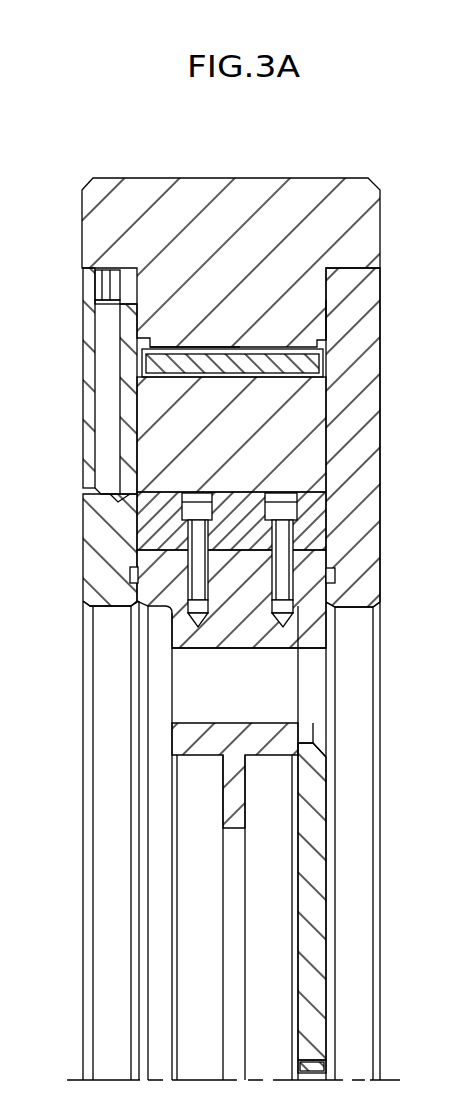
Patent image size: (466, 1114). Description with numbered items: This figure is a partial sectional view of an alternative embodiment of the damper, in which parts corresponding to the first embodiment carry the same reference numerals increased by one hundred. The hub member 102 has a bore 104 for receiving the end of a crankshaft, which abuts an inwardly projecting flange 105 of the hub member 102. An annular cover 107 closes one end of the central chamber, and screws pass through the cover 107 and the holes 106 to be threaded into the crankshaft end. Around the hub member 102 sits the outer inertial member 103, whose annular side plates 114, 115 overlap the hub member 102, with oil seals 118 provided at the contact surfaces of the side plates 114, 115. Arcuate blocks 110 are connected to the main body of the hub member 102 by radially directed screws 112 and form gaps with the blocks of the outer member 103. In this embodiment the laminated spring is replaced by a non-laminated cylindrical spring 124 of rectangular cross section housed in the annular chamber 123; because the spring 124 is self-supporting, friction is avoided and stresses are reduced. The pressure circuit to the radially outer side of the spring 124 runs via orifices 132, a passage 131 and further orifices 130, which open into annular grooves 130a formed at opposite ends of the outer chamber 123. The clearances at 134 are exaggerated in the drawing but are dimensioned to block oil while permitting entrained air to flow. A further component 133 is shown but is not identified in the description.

The hub member 102 is at (326, 637).
The outer inertial member 103 is at (262, 178).
The bore 104 is at (113, 777).
The inwardly projecting flange 105 is at (192, 737).
The holes 106 is at (192, 652).
The annular cover 107 is at (327, 786).
The arcuate blocks 110 is at (140, 533).
The radially directed screws 112 is at (137, 488).
The side plate 114 is at (382, 434).
The side plate 115 is at (88, 400).
The oil seals 118 is at (131, 577).
The annular chamber 123 is at (193, 345).
The cylindrical spring 124 is at (347, 348).
The further orifices 130 is at (138, 343).
The annular grooves 130a is at (132, 312).
The passage 131 is at (106, 428).
The orifices 132 is at (120, 498).
The retainer 133 is at (100, 281).
The clearances 134 is at (142, 364).